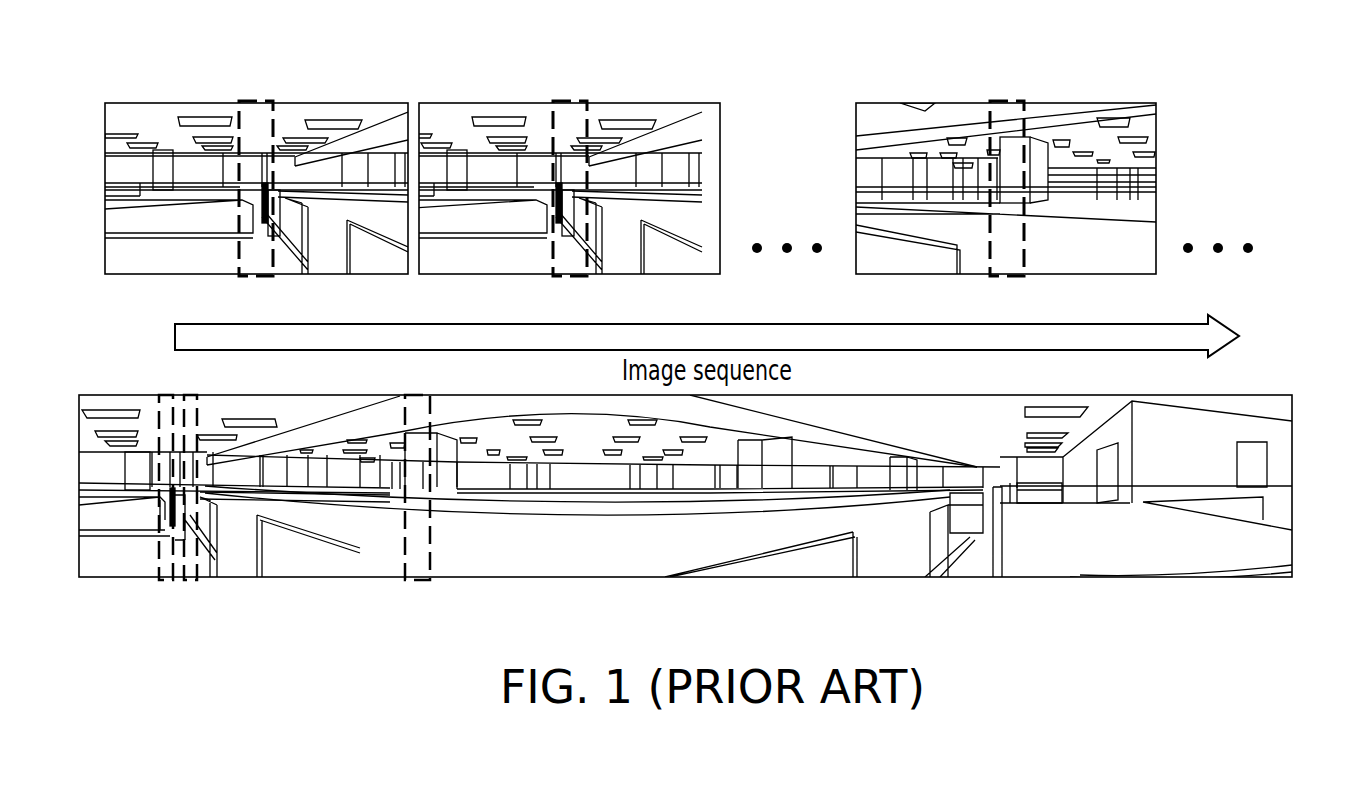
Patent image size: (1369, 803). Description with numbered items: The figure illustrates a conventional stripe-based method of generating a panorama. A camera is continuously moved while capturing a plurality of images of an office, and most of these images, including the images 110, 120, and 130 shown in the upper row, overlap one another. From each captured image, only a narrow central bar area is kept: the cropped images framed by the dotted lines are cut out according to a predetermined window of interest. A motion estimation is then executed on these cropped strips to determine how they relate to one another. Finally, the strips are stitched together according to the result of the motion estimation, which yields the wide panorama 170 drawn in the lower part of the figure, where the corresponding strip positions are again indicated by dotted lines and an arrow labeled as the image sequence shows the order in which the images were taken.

The image 110 is at (359, 103).
The image 120 is at (674, 103).
The image 130 is at (1108, 103).
The panorama 170 is at (1275, 395).